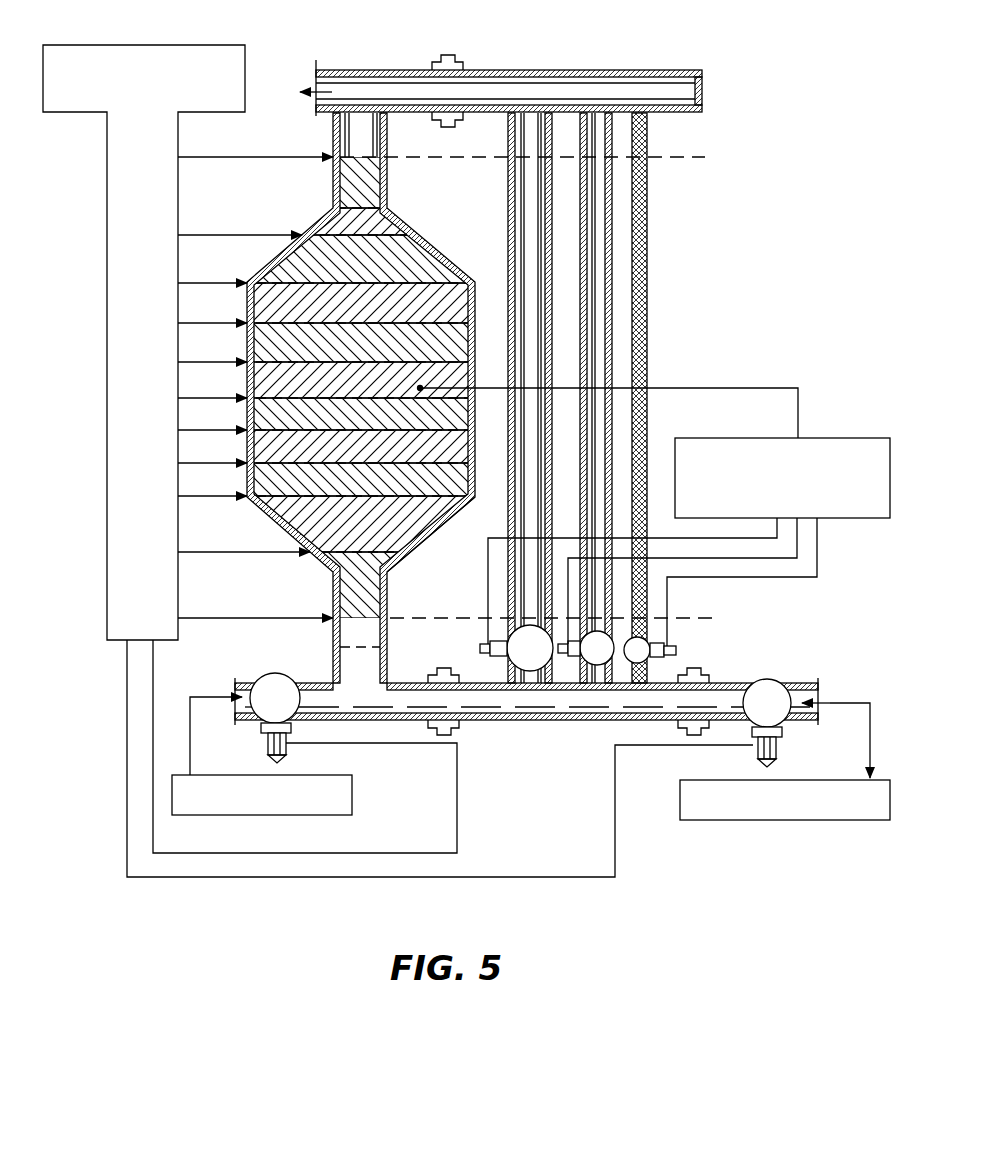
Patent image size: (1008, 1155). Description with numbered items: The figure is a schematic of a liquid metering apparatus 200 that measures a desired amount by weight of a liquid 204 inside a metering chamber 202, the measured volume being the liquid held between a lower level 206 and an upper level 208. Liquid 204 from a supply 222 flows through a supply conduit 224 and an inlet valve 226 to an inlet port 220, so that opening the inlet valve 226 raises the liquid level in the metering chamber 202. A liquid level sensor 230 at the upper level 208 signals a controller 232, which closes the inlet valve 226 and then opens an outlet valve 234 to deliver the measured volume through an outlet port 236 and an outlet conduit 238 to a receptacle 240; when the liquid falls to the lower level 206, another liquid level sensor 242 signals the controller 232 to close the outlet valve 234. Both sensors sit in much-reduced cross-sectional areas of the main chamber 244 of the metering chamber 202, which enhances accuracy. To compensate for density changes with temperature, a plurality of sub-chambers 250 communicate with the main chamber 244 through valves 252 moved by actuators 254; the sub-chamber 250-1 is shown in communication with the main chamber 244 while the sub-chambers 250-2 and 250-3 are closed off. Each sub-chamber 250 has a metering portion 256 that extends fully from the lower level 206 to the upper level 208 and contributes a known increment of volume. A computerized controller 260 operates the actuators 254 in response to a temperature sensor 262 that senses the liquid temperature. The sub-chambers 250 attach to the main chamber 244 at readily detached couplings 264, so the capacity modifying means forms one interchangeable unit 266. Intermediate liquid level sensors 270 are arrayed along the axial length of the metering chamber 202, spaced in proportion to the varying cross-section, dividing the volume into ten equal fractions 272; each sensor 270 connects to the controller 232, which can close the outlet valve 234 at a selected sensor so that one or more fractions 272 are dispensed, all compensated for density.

The liquid metering apparatus 200 is at (388, 28).
The metering chamber 202 is at (415, 245).
The liquid 204 is at (381, 337).
The lower level 206 is at (350, 606).
The upper level 208 is at (290, 156).
The inlet port 220 is at (345, 700).
The supply 222 is at (352, 795).
The supply conduit 224 is at (262, 676).
The inlet valve 226 is at (282, 716).
The liquid level sensor 230 is at (325, 163).
The controller 232 is at (178, 45).
The outlet valve 234 is at (775, 722).
The outlet port 236 is at (693, 700).
The outlet conduit 238 is at (785, 682).
The receptacle 240 is at (818, 820).
The liquid level sensor 242 is at (333, 614).
The main chamber 244 is at (408, 540).
The sub-chambers 250 is at (626, 361).
The sub-chamber 250-1 is at (647, 213).
The sub-chamber 250-2 is at (597, 255).
The sub-chamber 250-3 is at (530, 285).
The valve 252 is at (632, 664).
The actuator 254 is at (488, 648).
The metering portion 256 is at (641, 186).
The computerized controller 260 is at (866, 416).
The temperature sensor 262 is at (420, 392).
The couplings 264 is at (447, 55).
The interchangeable unit 266 is at (705, 90).
The intermediate liquid level sensors 270 is at (298, 238).
The equal fractions 272 is at (287, 455).